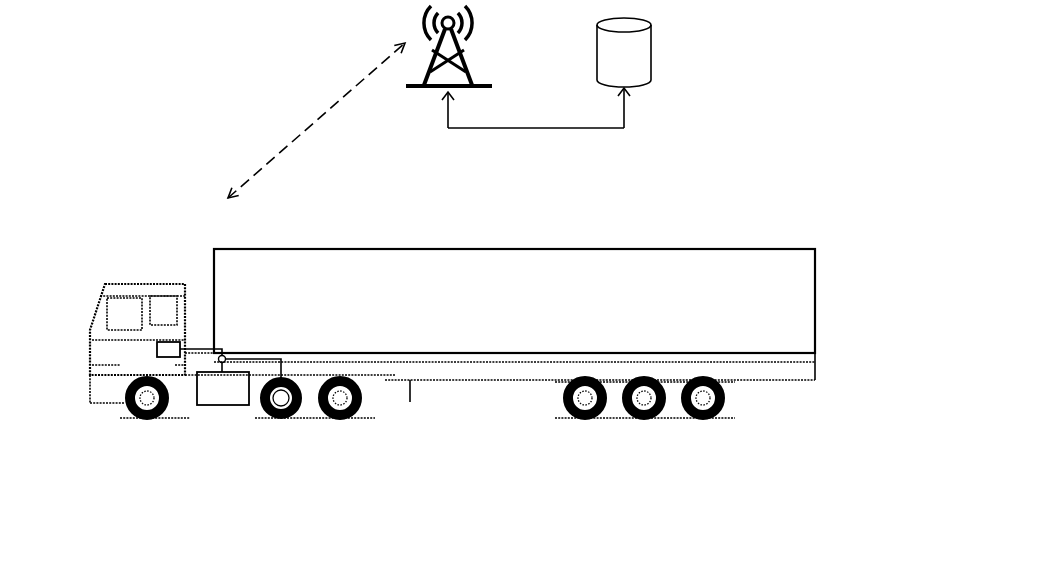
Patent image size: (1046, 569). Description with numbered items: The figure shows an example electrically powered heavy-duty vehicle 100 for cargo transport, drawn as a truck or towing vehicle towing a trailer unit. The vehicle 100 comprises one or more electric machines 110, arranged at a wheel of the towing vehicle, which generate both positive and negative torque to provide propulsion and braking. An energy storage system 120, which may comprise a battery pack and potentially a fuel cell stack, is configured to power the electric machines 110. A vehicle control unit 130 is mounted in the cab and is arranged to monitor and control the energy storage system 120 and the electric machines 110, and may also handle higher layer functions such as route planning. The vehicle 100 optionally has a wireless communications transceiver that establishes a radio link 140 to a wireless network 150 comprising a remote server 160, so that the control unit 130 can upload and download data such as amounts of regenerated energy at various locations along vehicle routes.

The heavy-duty vehicle 100 is at (100, 93).
The electric machine 110 is at (290, 420).
The energy storage system 120 is at (238, 399).
The vehicle control unit 130 is at (170, 342).
The radio link 140 is at (316, 121).
The wireless network 150 is at (488, 80).
The remote server 160 is at (655, 62).